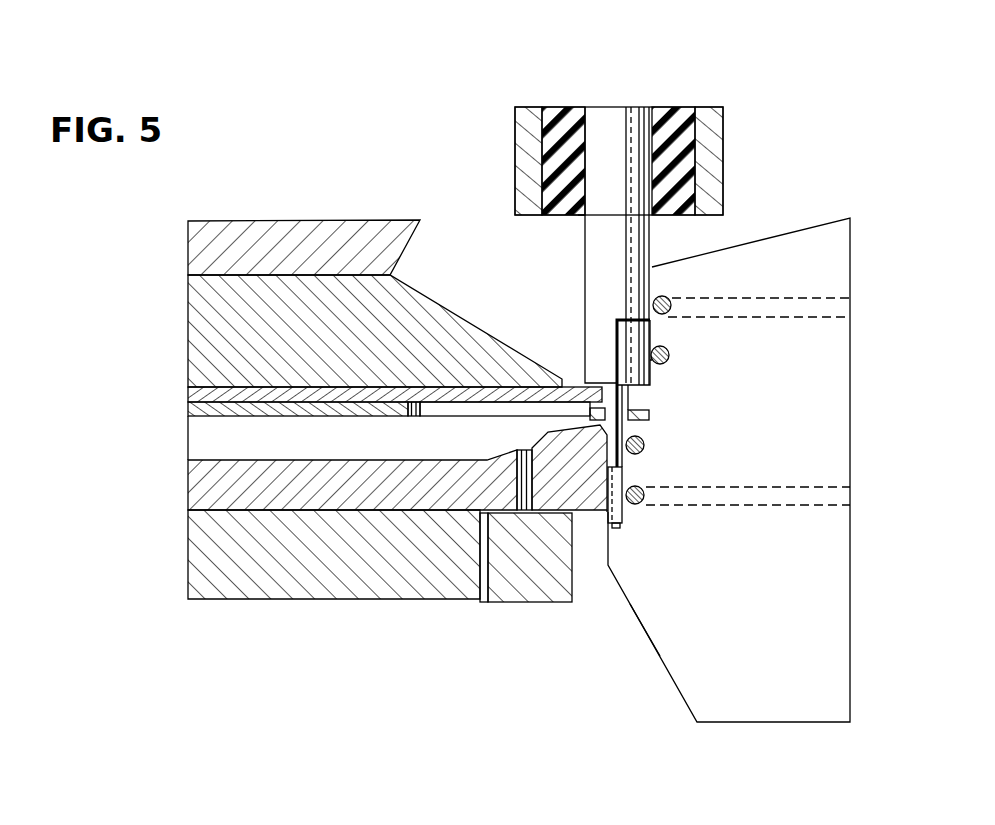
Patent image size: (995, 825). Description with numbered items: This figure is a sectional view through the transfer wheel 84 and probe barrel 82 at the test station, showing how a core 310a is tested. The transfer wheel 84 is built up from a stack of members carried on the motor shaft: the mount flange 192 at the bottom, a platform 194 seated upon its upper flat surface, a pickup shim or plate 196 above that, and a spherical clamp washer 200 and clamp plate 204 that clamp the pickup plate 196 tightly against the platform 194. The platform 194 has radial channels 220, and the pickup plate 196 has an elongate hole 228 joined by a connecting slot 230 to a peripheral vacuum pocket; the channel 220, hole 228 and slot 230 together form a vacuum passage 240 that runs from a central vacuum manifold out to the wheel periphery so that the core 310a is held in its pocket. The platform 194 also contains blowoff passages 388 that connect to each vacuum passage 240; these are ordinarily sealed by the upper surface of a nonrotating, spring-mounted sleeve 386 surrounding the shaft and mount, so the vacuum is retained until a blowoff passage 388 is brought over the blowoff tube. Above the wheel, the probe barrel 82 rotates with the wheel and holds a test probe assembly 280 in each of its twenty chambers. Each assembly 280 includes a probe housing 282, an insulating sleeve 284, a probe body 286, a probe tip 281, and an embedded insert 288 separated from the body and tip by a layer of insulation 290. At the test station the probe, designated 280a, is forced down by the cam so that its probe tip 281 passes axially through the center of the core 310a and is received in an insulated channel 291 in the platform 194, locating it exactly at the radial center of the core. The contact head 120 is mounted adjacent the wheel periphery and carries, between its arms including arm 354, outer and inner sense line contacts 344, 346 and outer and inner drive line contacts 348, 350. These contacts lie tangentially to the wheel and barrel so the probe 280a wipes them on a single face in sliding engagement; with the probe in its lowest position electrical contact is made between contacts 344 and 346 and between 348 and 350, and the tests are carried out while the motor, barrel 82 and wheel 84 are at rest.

The probe barrel 82 is at (188, 230).
The transfer wheel 84 is at (344, 432).
The contact head 120 is at (722, 470).
The mount flange 192 is at (188, 546).
The platform 194 is at (326, 481).
The pickup plate 196 is at (188, 410).
The clamp washer 200 is at (188, 393).
The clamp plate 204 is at (188, 318).
The channel 220 is at (188, 460).
The elongate hole 228 is at (409, 417).
The connecting slot 230 is at (550, 425).
The vacuum passage 240 is at (216, 440).
The test probe assembly 280 is at (613, 185).
The test probe 280a is at (575, 224).
The probe tip 281 is at (622, 512).
The probe housing 282 is at (715, 138).
The insulating sleeve 284 is at (680, 185).
The probe body 286 is at (587, 268).
The insert 288 is at (652, 342).
The layer of insulation 290 is at (652, 322).
The insulated channel 291 is at (605, 512).
The core 310a is at (650, 413).
The outer sense line contact 344 is at (667, 299).
The inner sense line contact 346 is at (641, 488).
The outer drive line contact 348 is at (668, 362).
The inner drive line contact 350 is at (646, 446).
The arm 354 is at (644, 620).
The nonrotating sleeve 386 is at (518, 602).
The blowoff passage 388 is at (527, 438).